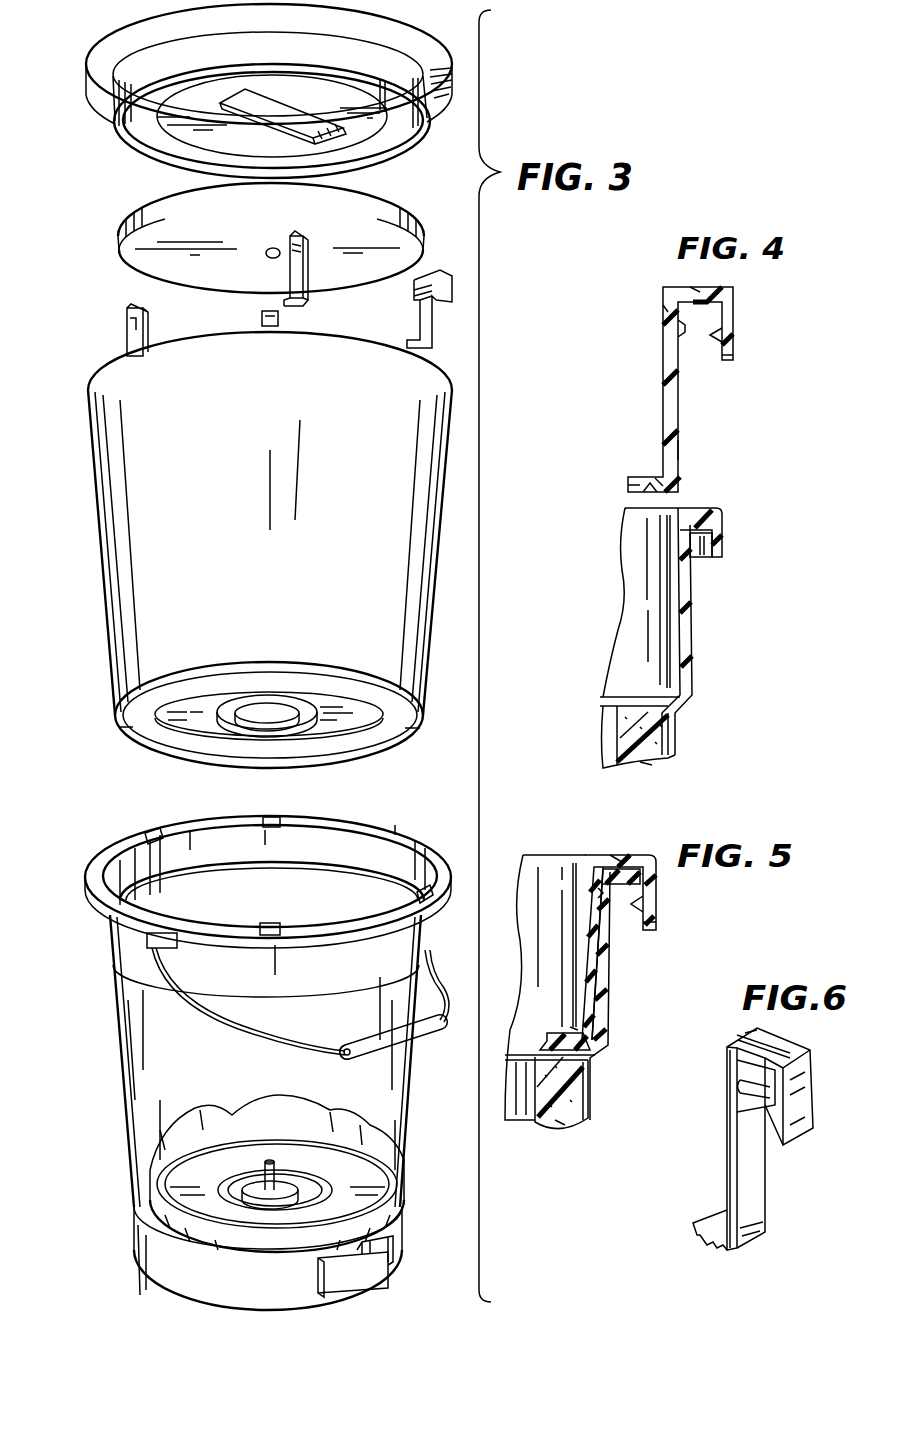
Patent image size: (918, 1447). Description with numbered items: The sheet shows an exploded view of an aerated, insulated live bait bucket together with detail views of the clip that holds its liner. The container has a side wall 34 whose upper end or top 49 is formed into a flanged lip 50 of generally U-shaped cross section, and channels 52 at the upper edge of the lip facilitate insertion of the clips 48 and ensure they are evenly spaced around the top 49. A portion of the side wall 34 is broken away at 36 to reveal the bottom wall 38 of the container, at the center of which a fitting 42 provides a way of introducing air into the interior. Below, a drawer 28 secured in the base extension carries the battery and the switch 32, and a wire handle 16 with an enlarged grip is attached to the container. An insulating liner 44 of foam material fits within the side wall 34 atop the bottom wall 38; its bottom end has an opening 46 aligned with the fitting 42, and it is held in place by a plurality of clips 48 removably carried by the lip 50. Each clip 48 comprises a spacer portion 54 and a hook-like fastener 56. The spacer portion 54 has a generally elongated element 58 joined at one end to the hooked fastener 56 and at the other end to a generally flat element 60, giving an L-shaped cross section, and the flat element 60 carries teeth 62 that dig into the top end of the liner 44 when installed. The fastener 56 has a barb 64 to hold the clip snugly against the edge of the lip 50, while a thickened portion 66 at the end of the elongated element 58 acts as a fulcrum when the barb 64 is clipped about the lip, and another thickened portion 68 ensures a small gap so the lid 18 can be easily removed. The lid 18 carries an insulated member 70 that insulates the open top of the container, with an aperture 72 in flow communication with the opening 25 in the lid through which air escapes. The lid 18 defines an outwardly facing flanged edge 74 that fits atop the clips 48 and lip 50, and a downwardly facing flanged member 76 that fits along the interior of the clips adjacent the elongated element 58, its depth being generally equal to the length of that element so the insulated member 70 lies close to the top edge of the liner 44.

In FIG. 3, the handle 16 is at (332, 1066).
In FIG. 3, the lid 18 is at (72, 101).
In FIG. 3, the opening 25 is at (288, 110).
In FIG. 3, the drawer 28 is at (356, 1276).
In FIG. 3, the switch 32 is at (392, 1248).
In FIG. 3, the side wall 34 is at (150, 1204).
In FIG. 4, the side wall 34 is at (676, 740).
In FIG. 5, the side wall 34 is at (590, 1093).
In FIG. 3, the broken-away portion 36 is at (152, 1146).
In FIG. 3, the bottom wall 38 is at (216, 1166).
In FIG. 3, the fitting 42 is at (278, 1180).
In FIG. 3, the insulating liner 44 is at (118, 501).
In FIG. 4, the insulating liner 44 is at (652, 764).
In FIG. 5, the insulating liner 44 is at (565, 1124).
In FIG. 3, the opening 46 is at (293, 720).
In FIG. 3, the clip 48 is at (306, 284).
In FIG. 4, the clip 48 is at (716, 407).
In FIG. 6, the clip 48 is at (712, 1173).
In FIG. 3, the top end 49 is at (106, 951).
In FIG. 4, the top end 49 is at (693, 628).
In FIG. 5, the top end 49 is at (610, 1000).
In FIG. 3, the flanged lip 50 is at (88, 905).
In FIG. 4, the flanged lip 50 is at (703, 558).
In FIG. 3, the channel 52 is at (148, 832).
In FIG. 4, the channel 52 is at (712, 508).
In FIG. 4, the spacer portion 54 is at (632, 330).
In FIG. 4, the hook-like fastener 56 is at (743, 288).
In FIG. 4, the elongated element 58 is at (679, 452).
In FIG. 5, the elongated element 58 is at (588, 957).
In FIG. 4, the flat element 60 is at (660, 486).
In FIG. 5, the flat element 60 is at (575, 1027).
In FIG. 4, the teeth 62 is at (678, 491).
In FIG. 5, the teeth 62 is at (545, 1043).
In FIG. 4, the barb 64 is at (727, 361).
In FIG. 5, the barb 64 is at (643, 930).
In FIG. 4, the thickened portion 66 is at (662, 315).
In FIG. 5, the thickened portion 66 is at (595, 884).
In FIG. 4, the thickened portion 68 is at (705, 286).
In FIG. 5, the thickened portion 68 is at (626, 855).
In FIG. 3, the insulated member 70 is at (135, 254).
In FIG. 3, the aperture 72 is at (268, 260).
In FIG. 3, the outwardly facing flanged edge 74 is at (118, 53).
In FIG. 3, the downwardly facing flanged member 76 is at (147, 137).